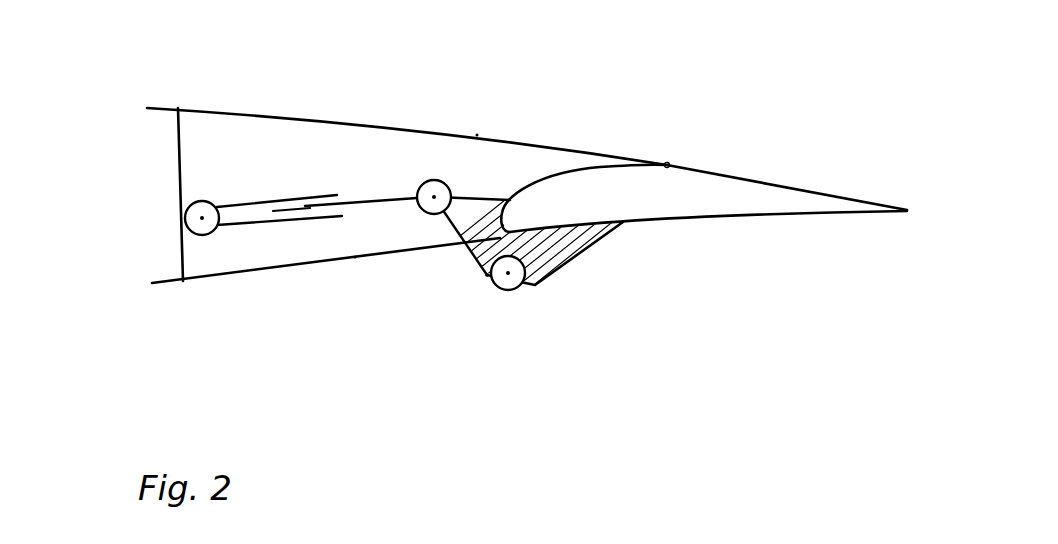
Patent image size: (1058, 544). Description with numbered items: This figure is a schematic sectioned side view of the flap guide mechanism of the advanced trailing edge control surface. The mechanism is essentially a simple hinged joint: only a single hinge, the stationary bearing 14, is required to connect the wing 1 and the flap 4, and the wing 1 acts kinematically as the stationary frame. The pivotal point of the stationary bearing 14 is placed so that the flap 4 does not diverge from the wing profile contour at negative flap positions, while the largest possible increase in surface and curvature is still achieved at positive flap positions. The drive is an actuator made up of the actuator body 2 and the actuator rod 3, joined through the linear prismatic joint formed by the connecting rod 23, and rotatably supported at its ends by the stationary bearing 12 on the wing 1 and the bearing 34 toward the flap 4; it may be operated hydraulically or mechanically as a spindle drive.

The wing 1 is at (175, 157).
The actuator body 2 is at (275, 200).
The actuator rod 3 is at (375, 200).
The flap 4 is at (660, 222).
The stationary bearing 12 is at (202, 218).
The connecting rod 23 is at (312, 208).
The bearing 34 is at (434, 197).
The stationary bearing 14 is at (508, 273).